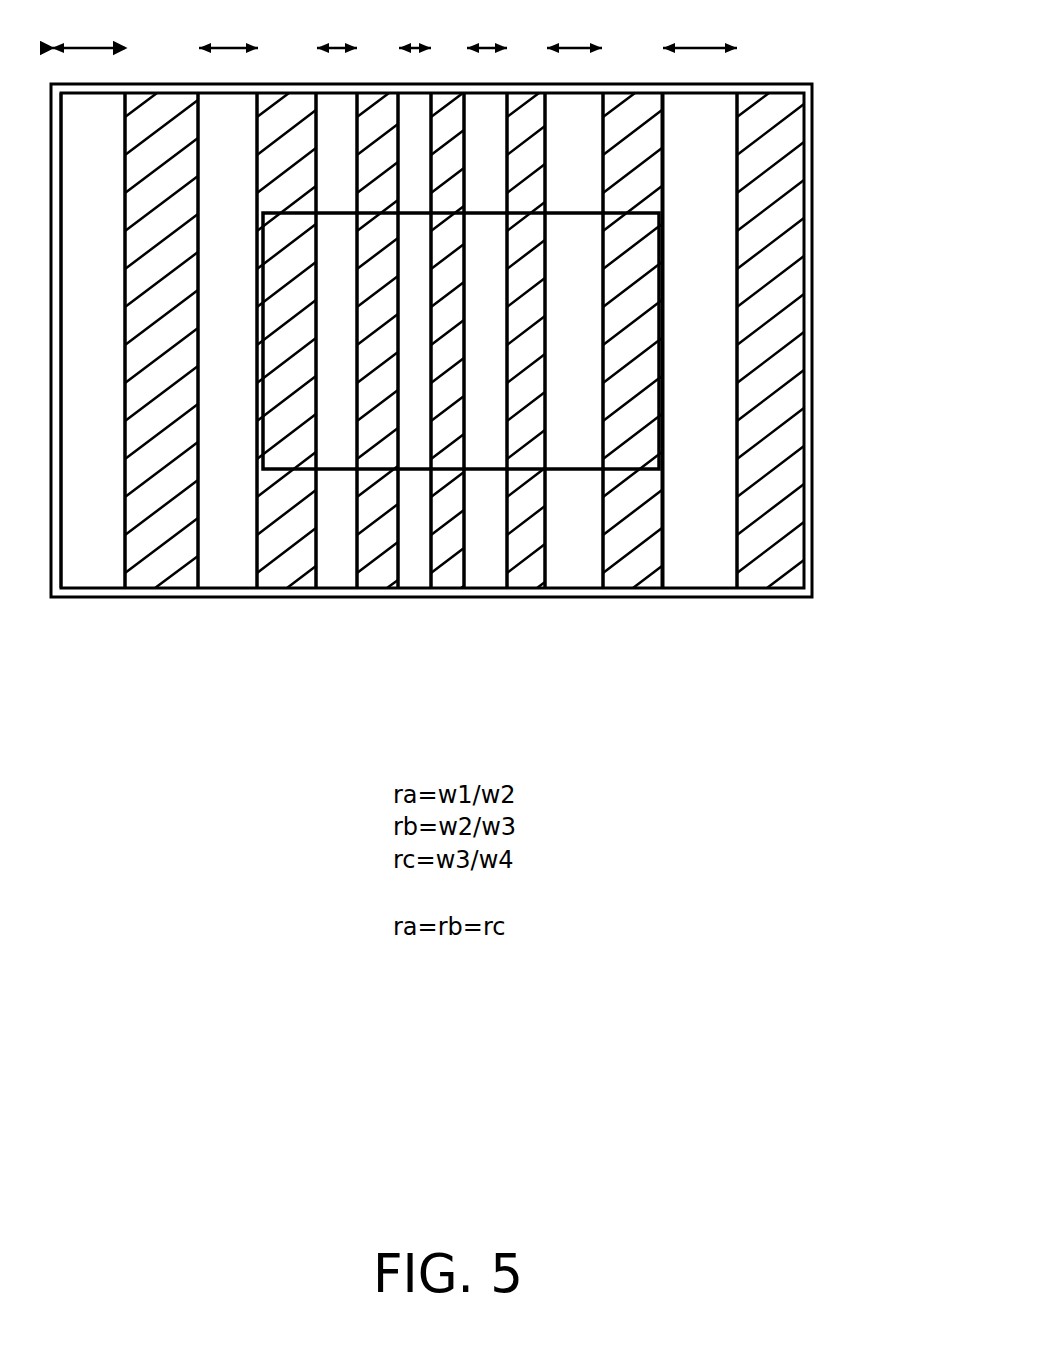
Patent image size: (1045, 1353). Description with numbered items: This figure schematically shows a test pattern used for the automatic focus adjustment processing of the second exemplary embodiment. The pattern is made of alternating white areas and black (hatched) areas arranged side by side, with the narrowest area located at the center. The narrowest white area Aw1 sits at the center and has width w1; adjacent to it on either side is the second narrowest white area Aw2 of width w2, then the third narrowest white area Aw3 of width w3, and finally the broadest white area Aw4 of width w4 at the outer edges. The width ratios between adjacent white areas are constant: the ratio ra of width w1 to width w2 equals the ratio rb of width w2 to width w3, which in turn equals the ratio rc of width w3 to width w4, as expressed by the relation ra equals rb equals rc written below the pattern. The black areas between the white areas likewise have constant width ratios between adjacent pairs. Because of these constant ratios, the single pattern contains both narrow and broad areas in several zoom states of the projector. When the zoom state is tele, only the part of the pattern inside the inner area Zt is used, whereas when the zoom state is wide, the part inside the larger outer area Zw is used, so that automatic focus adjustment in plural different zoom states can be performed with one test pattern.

The area Zw is at (806, 398).
The area Zt is at (660, 268).
The narrowest white area Aw1 is at (412, 530).
The second narrowest white area Aw2 is at (335, 530).
The third narrowest white area Aw3 is at (226, 530).
The white area Aw4 is at (91, 530).
The width of the narrowest white area w1 is at (415, 34).
The width of the second narrowest white area w2 is at (412, 34).
The width of the third narrowest white area w3 is at (400, 34).
The width of the white area Aw4 w4 is at (394, 34).